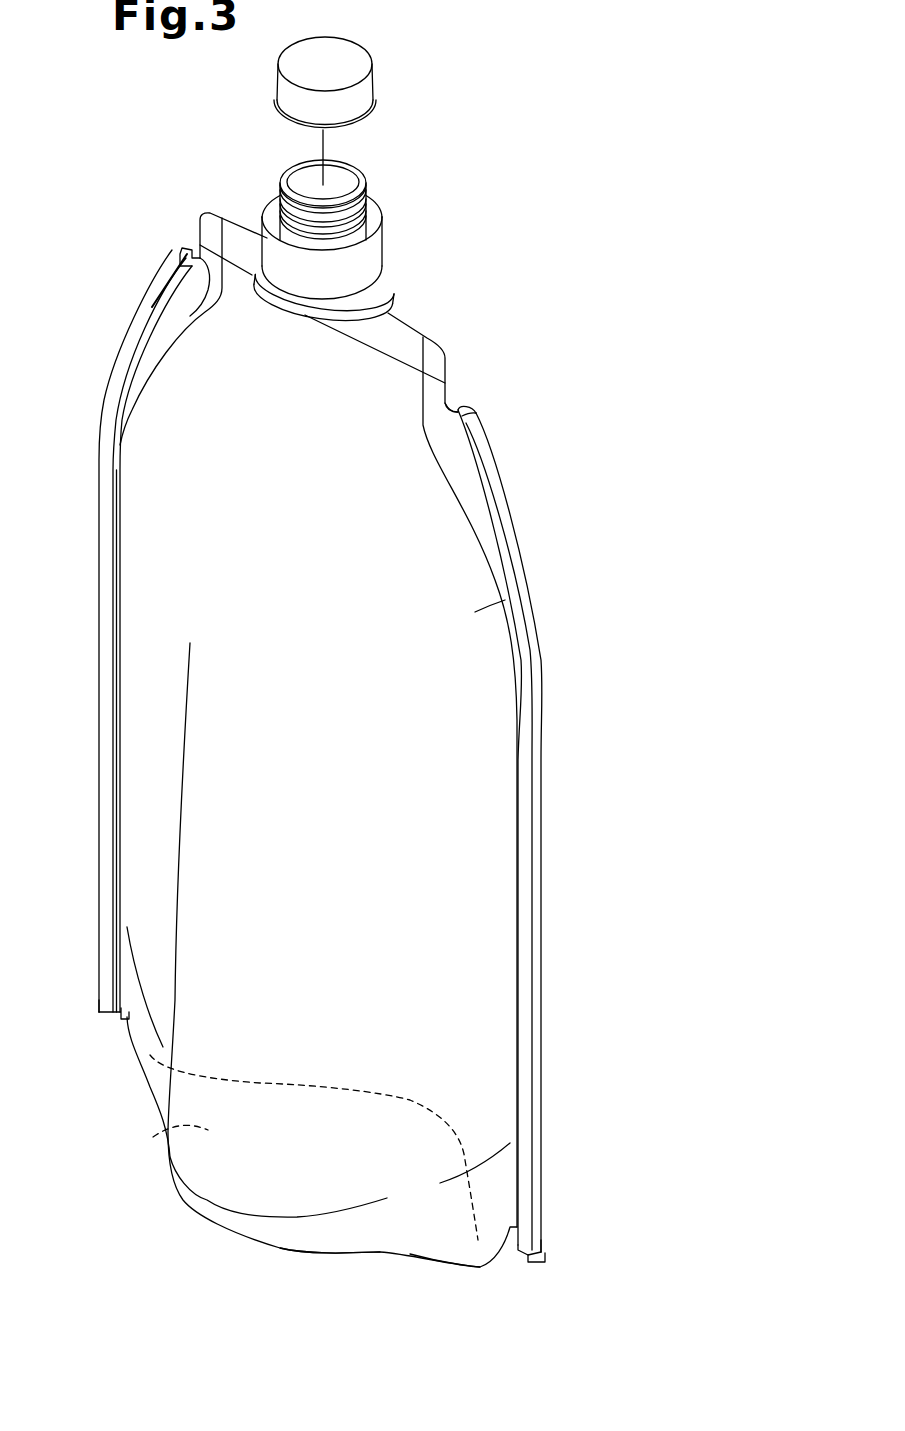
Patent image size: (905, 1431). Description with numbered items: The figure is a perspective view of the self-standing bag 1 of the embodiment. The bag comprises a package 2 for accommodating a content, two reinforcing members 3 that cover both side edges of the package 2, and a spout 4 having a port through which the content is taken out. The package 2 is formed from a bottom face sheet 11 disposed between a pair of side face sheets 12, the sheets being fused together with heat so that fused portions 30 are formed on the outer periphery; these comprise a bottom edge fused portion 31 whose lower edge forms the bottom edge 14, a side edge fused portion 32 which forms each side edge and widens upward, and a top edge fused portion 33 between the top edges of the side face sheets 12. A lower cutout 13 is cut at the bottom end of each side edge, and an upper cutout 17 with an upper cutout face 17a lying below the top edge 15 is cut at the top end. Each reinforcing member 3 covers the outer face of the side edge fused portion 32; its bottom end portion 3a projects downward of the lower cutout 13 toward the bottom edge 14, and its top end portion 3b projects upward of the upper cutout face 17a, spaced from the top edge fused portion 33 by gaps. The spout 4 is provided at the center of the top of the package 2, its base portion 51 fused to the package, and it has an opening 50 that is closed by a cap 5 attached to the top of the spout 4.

The self-standing bag 1 is at (557, 383).
The package 2 is at (410, 385).
The reinforcing member 3 is at (525, 800).
The bottom end portion 3a is at (100, 1015).
The top end portion 3b is at (185, 245).
The spout 4 is at (372, 222).
The cap 5 is at (345, 62).
The bottom face sheet 11 is at (170, 1133).
The side face sheet 12 is at (478, 608).
The lower cutout 13 is at (113, 1040).
The bottom edge 14 is at (312, 1256).
The top edge 15 is at (400, 318).
The upper cutout 17 is at (171, 176).
The upper cutout face 17a is at (204, 300).
The fused portion 30 is at (468, 478).
The bottom edge fused portion 31 is at (440, 1240).
The side edge fused portion 32 is at (500, 550).
The top edge fused portion 33 is at (235, 228).
The opening 50 is at (352, 175).
The base portion 51 is at (302, 325).